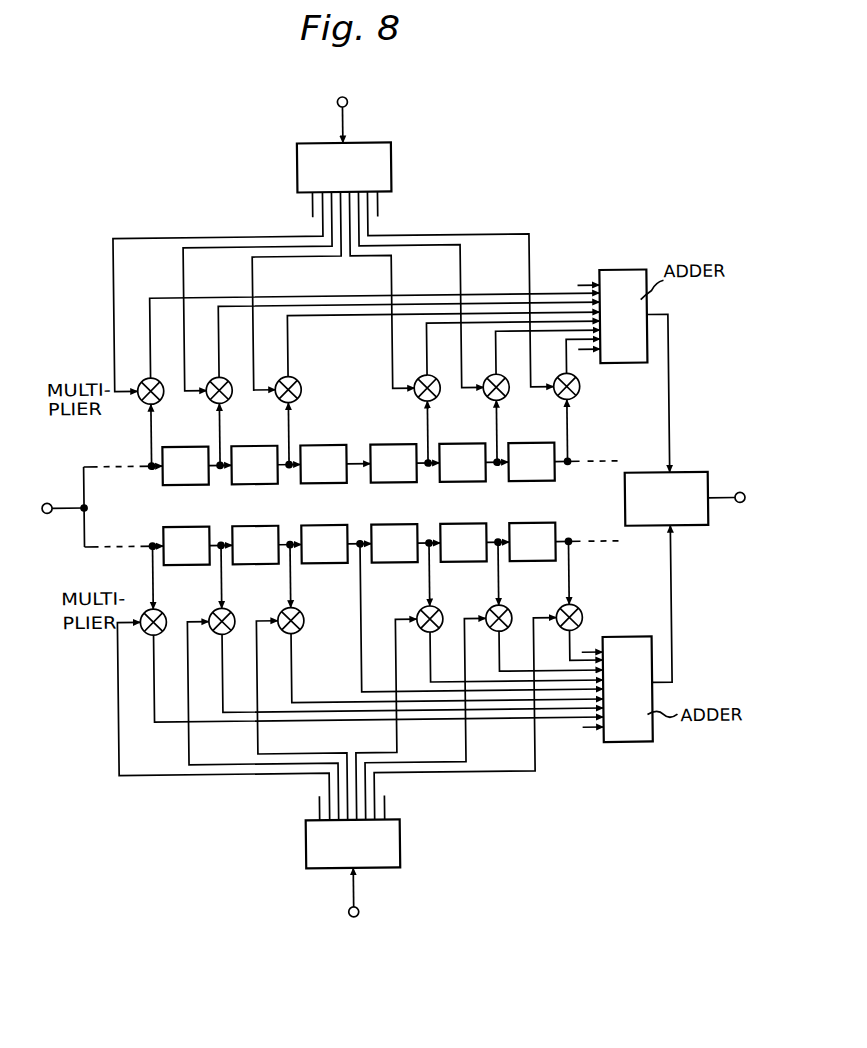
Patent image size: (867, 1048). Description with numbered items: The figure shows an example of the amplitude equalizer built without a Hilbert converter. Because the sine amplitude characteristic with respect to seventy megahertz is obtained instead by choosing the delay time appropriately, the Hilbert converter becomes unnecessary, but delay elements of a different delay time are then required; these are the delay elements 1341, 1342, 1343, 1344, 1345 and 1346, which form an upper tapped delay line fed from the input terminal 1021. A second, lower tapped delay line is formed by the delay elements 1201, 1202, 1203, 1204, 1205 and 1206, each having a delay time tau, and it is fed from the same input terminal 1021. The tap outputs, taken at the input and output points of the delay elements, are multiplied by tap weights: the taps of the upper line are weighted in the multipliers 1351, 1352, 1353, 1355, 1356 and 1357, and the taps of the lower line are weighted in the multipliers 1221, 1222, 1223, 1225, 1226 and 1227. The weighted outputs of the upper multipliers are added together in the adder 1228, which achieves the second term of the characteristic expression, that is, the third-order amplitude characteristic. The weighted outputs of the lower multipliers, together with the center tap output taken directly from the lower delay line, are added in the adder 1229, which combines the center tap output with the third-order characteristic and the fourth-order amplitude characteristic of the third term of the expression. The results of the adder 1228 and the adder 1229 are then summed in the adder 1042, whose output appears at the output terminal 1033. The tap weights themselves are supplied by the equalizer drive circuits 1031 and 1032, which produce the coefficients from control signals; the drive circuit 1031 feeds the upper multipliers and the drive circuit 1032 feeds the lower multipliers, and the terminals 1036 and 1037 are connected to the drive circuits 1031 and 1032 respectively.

The input terminal 1021 is at (50, 498).
The equalizer drive circuit 1031 is at (395, 148).
The equalizer drive circuit 1032 is at (396, 824).
The terminal 1033 is at (738, 495).
The driver control input terminal 1036 is at (352, 97).
The driver control input terminal 1037 is at (355, 909).
The adder 1042 is at (630, 475).
The adder 1228 is at (622, 272).
The adder 1229 is at (627, 639).
The delay element 1201 is at (186, 524).
The delay element 1202 is at (255, 524).
The delay element 1203 is at (324, 524).
The delay element 1204 is at (394, 524).
The delay element 1205 is at (463, 524).
The delay element 1206 is at (532, 524).
The delay element 1341 is at (186, 444).
The delay element 1342 is at (255, 444).
The delay element 1343 is at (324, 444).
The delay element 1344 is at (394, 444).
The delay element 1345 is at (463, 444).
The delay element 1346 is at (532, 444).
The multiplier 1221 is at (170, 606).
The multiplier 1222 is at (230, 611).
The multiplier 1223 is at (299, 611).
The multiplier 1225 is at (446, 606).
The multiplier 1226 is at (515, 606).
The multiplier 1227 is at (586, 606).
The multiplier 1351 is at (162, 396).
The multiplier 1352 is at (230, 396).
The multiplier 1353 is at (299, 396).
The multiplier 1355 is at (438, 396).
The multiplier 1356 is at (507, 396).
The multiplier 1357 is at (578, 396).